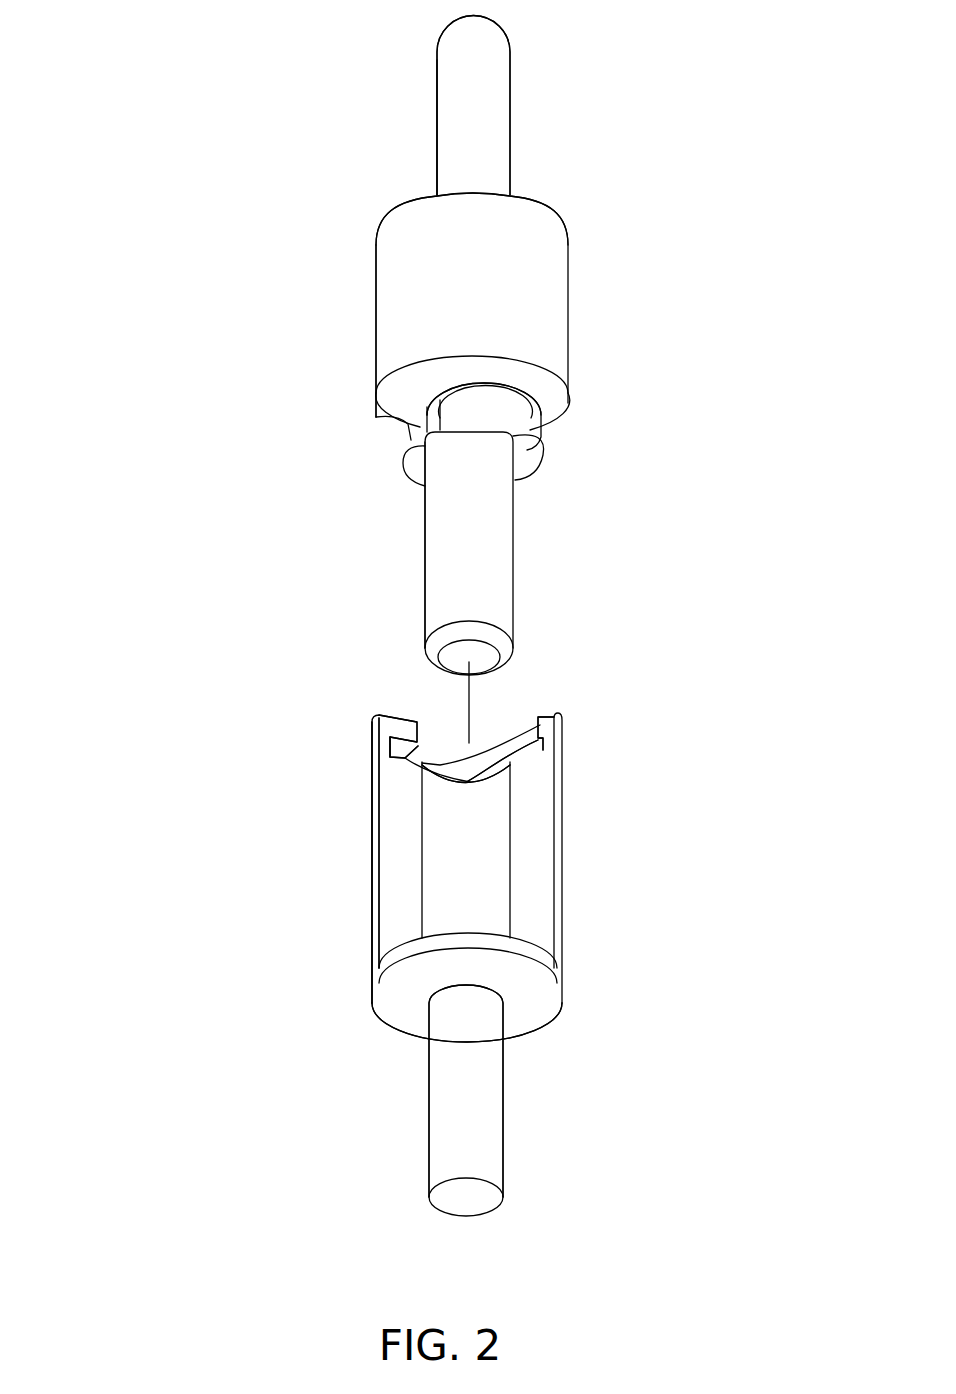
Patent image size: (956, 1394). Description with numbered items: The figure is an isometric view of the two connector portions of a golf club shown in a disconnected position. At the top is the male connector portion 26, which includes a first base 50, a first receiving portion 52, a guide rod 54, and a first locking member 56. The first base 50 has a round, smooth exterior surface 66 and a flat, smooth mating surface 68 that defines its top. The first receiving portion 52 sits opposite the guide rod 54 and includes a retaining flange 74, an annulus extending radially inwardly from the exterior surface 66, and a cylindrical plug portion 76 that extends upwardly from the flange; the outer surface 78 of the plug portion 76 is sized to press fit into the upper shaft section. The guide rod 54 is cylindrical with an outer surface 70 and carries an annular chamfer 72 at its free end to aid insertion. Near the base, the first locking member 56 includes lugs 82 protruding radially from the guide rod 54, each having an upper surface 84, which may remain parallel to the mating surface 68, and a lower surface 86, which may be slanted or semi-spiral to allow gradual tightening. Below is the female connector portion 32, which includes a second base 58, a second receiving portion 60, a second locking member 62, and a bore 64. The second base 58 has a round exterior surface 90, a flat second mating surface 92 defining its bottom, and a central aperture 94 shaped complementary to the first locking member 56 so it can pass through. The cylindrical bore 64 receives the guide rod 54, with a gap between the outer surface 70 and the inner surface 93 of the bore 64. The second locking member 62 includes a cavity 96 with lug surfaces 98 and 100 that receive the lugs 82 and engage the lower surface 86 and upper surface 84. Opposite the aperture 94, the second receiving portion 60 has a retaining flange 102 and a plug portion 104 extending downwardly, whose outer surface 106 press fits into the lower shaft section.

The male connector portion 26 is at (207, 322).
The female connector portion 32 is at (302, 848).
The first base 50 is at (392, 373).
The first receiving portion 52 is at (385, 40).
The guide rod 54 is at (440, 555).
The first locking member 56 is at (322, 462).
The second base 58 is at (372, 765).
The second receiving portion 60 is at (232, 1112).
The second locking member 62 is at (549, 758).
The bore 64 is at (440, 870).
The exterior surface 66 is at (392, 302).
The mating surface 68 is at (538, 382).
The outer surface 70 is at (420, 605).
The annular chamfer 72 is at (505, 645).
The retaining flange 74 is at (414, 200).
The plug portion 76 is at (437, 110).
The outer surface 78 is at (492, 102).
The lugs 82 is at (405, 478).
The upper surface 84 is at (527, 445).
The lower surface 86 is at (376, 418).
The exterior surface 90 is at (372, 810).
The second mating surface 92 is at (407, 718).
The inner surface 93 is at (437, 920).
The aperture 94 is at (507, 735).
The cavity 96 is at (492, 785).
The lug surface 98 is at (503, 810).
The lug surface 100 is at (495, 805).
The retaining flange 102 is at (536, 1012).
The plug portion 104 is at (442, 1203).
The outer surface 106 is at (448, 1145).